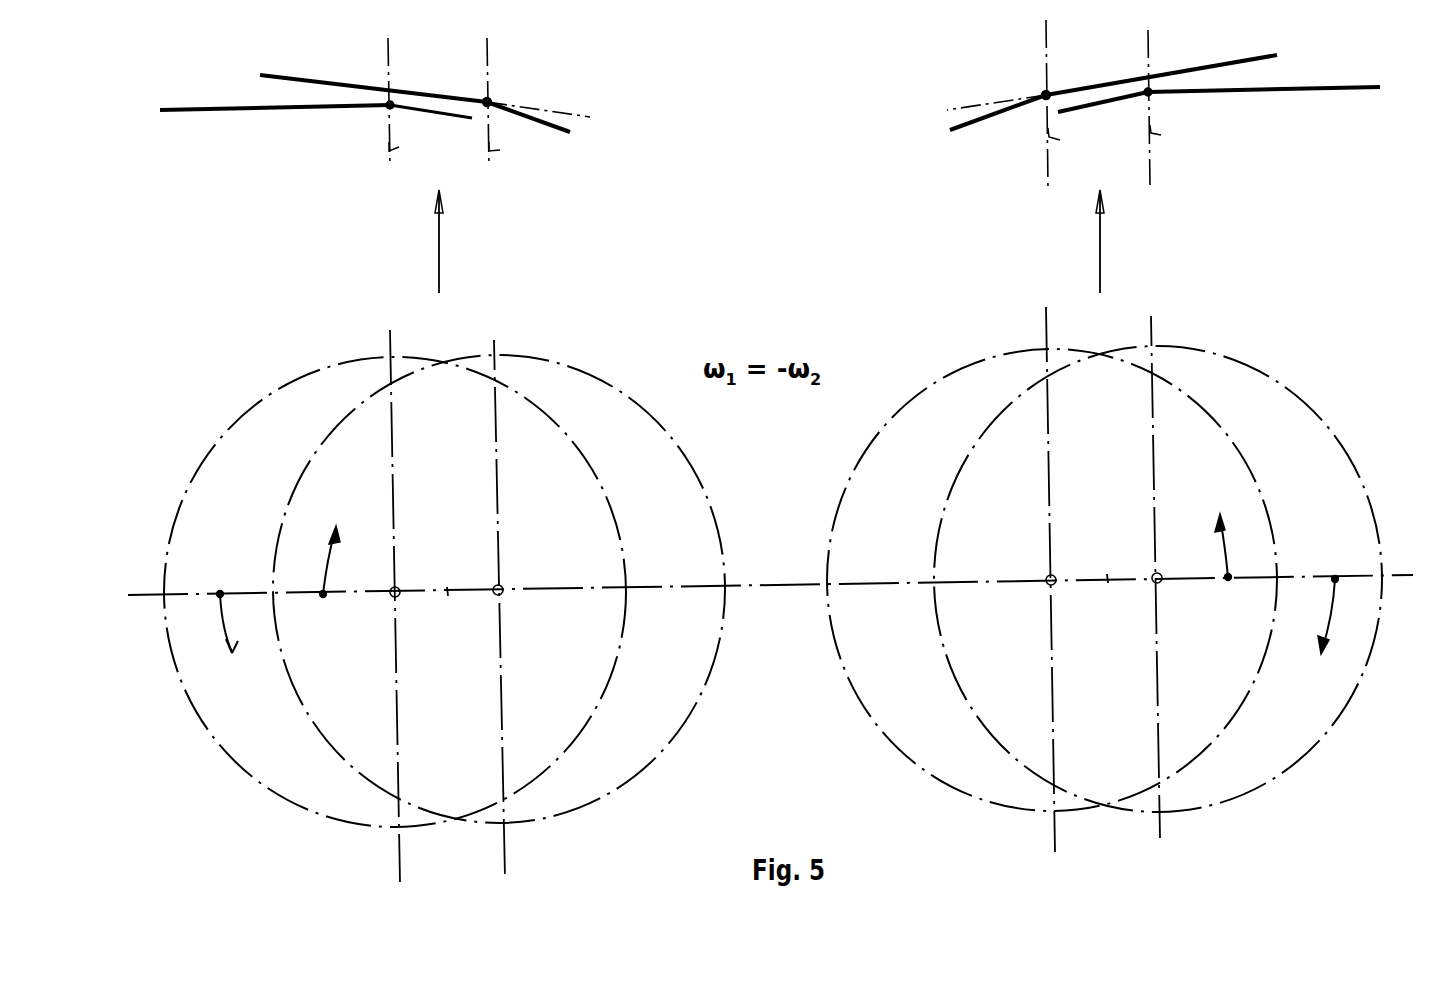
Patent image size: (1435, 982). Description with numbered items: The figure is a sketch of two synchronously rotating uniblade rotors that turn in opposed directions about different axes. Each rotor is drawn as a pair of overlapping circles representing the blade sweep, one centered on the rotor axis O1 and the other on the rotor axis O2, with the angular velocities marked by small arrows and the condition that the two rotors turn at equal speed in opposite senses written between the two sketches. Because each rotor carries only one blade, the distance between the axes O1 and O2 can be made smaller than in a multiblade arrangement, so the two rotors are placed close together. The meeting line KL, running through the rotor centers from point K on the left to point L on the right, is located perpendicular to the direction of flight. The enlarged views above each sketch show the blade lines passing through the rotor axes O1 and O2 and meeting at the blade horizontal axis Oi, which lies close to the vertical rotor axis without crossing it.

The meeting line end point K is at (426, 591).
The meeting line end point L is at (1131, 579).
The rotor axis O1 is at (654, 451).
The rotor axis O2 is at (820, 454).
The blade horizontal axis Oi is at (490, 100).